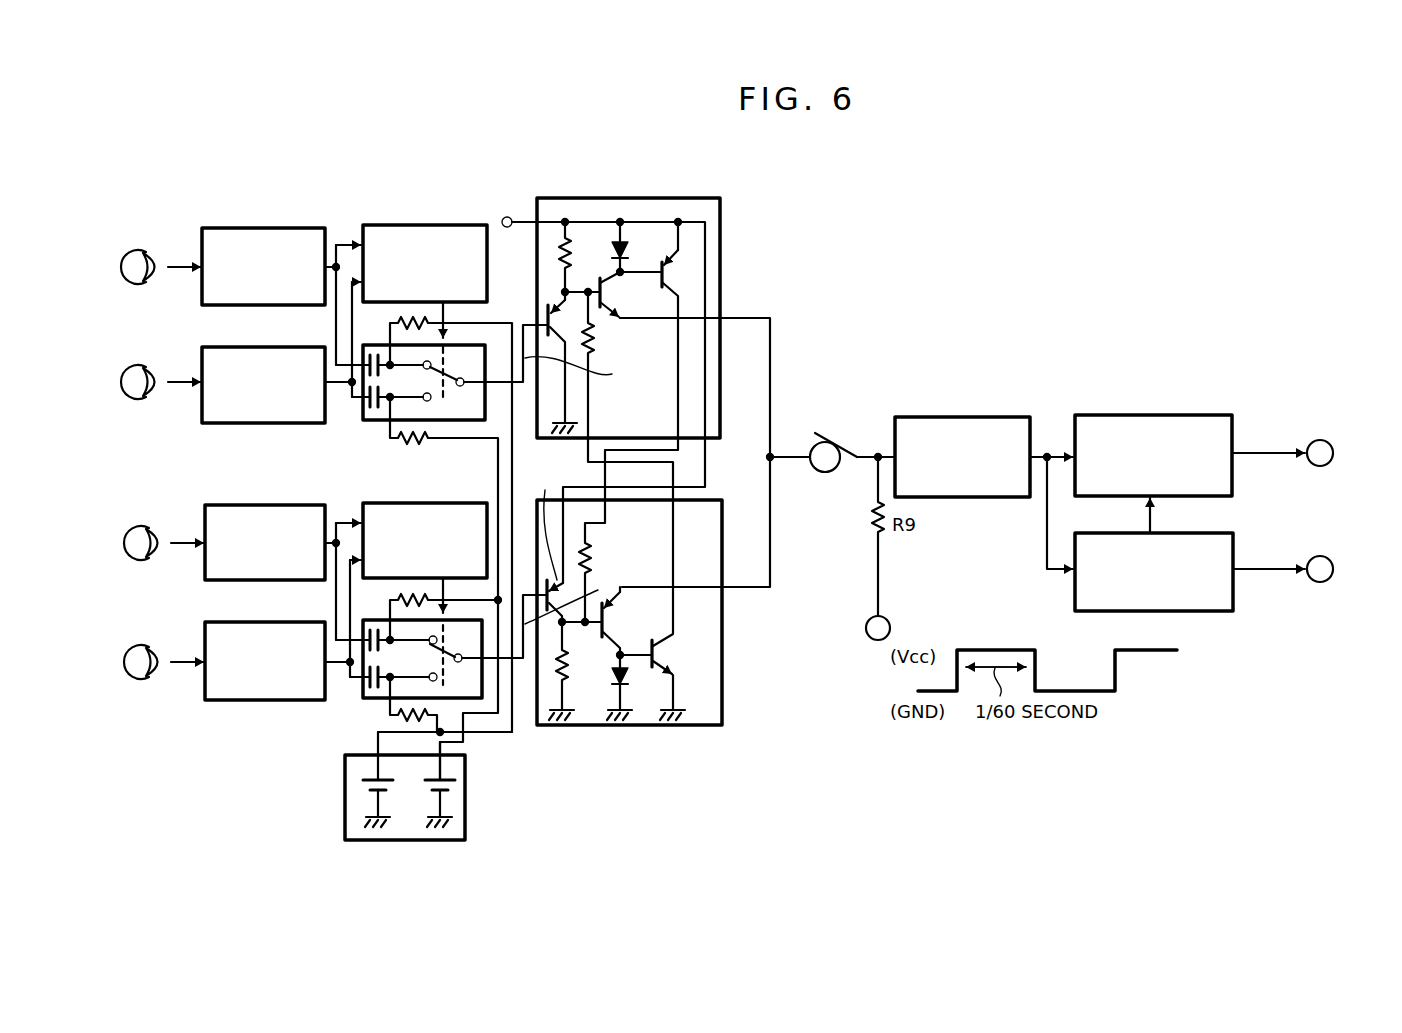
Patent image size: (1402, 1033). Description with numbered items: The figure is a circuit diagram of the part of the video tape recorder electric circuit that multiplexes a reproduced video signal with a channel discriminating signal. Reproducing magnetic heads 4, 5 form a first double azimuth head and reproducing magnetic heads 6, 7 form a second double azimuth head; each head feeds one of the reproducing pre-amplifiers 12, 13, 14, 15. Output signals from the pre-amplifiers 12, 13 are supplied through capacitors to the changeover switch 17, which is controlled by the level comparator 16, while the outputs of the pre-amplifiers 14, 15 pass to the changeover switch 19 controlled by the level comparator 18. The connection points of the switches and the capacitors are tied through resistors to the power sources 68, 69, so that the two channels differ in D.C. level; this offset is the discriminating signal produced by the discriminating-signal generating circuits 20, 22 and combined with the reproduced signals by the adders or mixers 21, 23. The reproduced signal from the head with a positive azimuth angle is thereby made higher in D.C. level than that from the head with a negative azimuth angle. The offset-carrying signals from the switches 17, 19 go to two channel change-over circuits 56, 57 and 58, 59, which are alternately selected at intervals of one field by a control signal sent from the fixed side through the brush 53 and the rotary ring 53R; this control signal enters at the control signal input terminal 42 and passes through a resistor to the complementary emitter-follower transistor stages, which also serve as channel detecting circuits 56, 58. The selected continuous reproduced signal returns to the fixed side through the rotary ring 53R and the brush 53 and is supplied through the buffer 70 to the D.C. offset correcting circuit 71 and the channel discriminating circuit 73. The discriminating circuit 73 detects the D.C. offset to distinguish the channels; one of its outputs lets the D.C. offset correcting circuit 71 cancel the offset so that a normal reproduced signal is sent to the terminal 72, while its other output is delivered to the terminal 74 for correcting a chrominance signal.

The reproducing magnetic head 4 is at (139, 250).
The reproducing magnetic head 5 is at (139, 368).
The reproducing magnetic head 6 is at (142, 527).
The reproducing magnetic head 7 is at (142, 646).
The reproducing pre-amplifier 12 is at (265, 228).
The reproducing pre-amplifier 13 is at (258, 347).
The reproducing pre-amplifier 14 is at (262, 505).
The reproducing pre-amplifier 15 is at (255, 622).
The level comparator 16 is at (425, 225).
The changeover switch 17 is at (470, 466).
The level comparator 18 is at (402, 503).
The changeover switch 19 is at (500, 746).
The discriminating-signal generating circuit 20 is at (401, 820).
The adder or mixer 21 is at (442, 542).
The discriminating-signal generating circuit 22 is at (401, 820).
The adder or mixer 23 is at (456, 679).
The control signal input terminal 42 is at (890, 622).
The brush 53 is at (832, 458).
The rotary ring 53R is at (825, 472).
The channel change-over circuit 56 is at (620, 383).
The channel change-over circuit 57 is at (650, 198).
The channel change-over circuit 58 is at (688, 597).
The channel change-over circuit 59 is at (722, 660).
The power source 68 is at (345, 795).
The power source 69 is at (465, 790).
The buffer 70 is at (960, 417).
The D.C. offset correcting circuit 71 is at (1160, 415).
The terminal 72 is at (1320, 440).
The channel discriminating circuit 73 is at (1185, 611).
The terminal 74 is at (1322, 556).